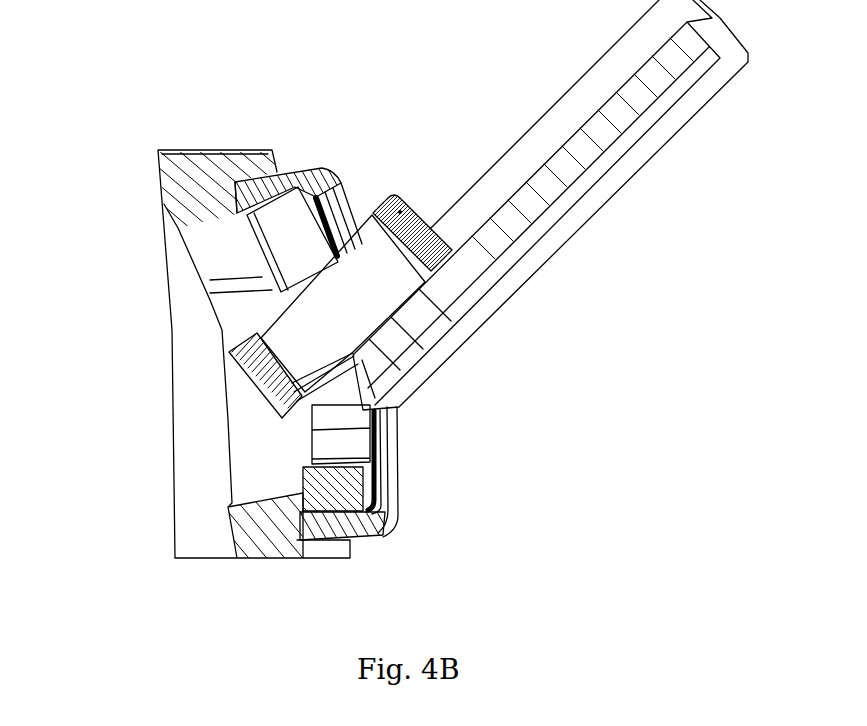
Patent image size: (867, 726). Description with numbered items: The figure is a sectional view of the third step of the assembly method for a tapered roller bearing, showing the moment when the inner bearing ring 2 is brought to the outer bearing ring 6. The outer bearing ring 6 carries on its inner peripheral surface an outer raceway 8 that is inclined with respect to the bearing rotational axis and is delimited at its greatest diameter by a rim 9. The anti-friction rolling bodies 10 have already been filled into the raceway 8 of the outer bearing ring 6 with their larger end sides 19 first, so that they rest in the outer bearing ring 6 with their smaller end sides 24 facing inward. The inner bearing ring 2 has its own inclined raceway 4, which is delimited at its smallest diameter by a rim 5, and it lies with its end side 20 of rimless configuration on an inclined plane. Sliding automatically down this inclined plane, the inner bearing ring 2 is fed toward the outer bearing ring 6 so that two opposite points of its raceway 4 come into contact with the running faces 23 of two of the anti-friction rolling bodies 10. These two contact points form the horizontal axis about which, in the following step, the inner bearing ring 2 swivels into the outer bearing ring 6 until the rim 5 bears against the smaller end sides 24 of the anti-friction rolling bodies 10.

The inner bearing ring 2 is at (248, 318).
The raceway 4 is at (437, 200).
The rim 5 is at (400, 211).
The outer bearing ring 6 is at (290, 149).
The outer raceway 8 is at (297, 237).
The rim 9 is at (314, 194).
The anti-friction rolling bodies 10 is at (328, 428).
The larger end sides 19 is at (377, 467).
The end side of rimless configuration 20 is at (236, 204).
The running faces 23 is at (380, 443).
The smaller end sides 24 is at (302, 486).